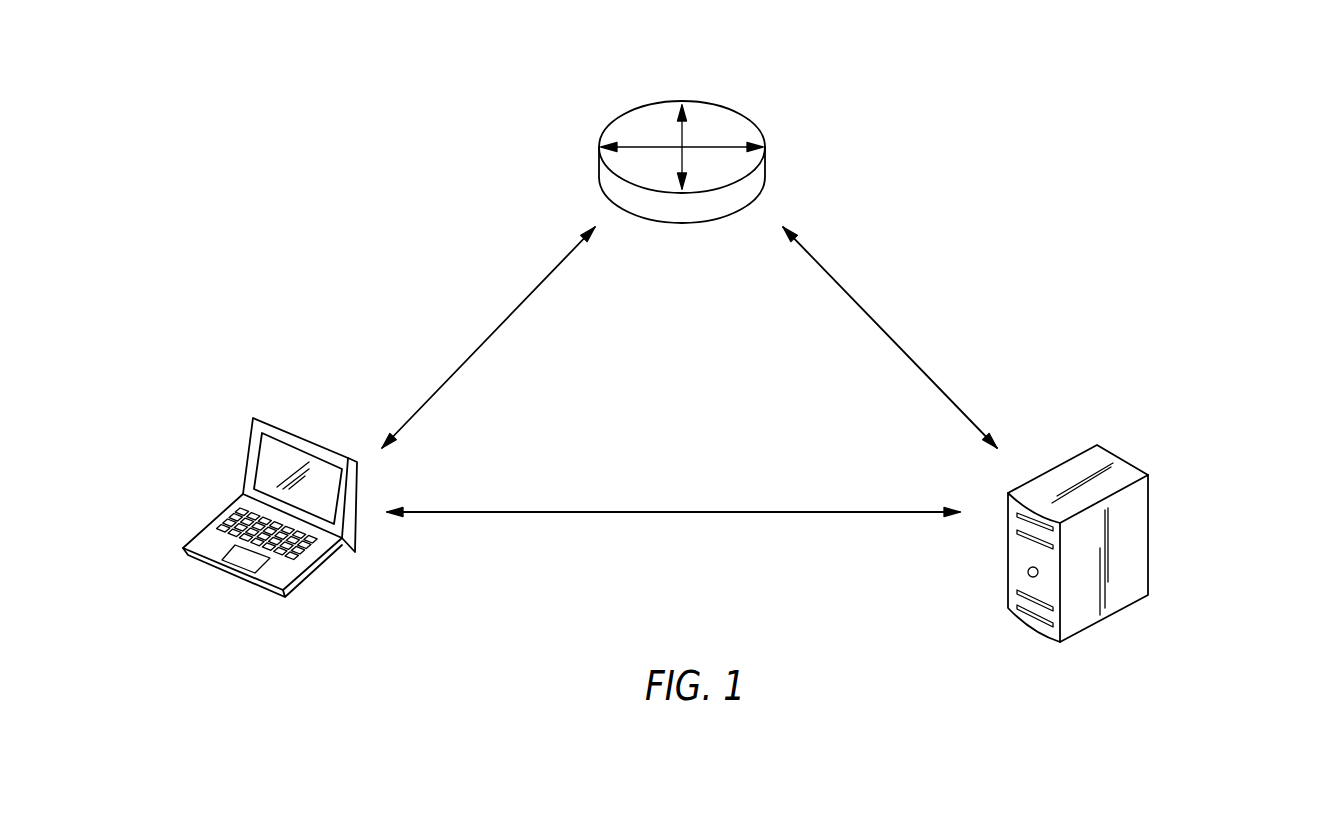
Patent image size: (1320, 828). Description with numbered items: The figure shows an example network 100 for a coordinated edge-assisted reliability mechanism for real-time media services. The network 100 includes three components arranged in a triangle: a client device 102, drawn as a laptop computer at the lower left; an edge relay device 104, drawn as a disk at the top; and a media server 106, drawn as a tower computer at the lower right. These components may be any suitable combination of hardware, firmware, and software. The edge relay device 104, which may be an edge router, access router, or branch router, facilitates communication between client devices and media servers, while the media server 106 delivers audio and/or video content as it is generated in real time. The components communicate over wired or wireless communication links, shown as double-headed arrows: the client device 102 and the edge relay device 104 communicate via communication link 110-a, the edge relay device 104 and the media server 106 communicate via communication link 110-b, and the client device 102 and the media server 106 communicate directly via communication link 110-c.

The network 100 is at (1175, 105).
The client device 102 is at (243, 448).
The edge relay device 104 is at (748, 120).
The media server 106 is at (1133, 467).
The communication link 110-a is at (480, 343).
The communication link 110-b is at (900, 342).
The communication link 110-c is at (720, 513).